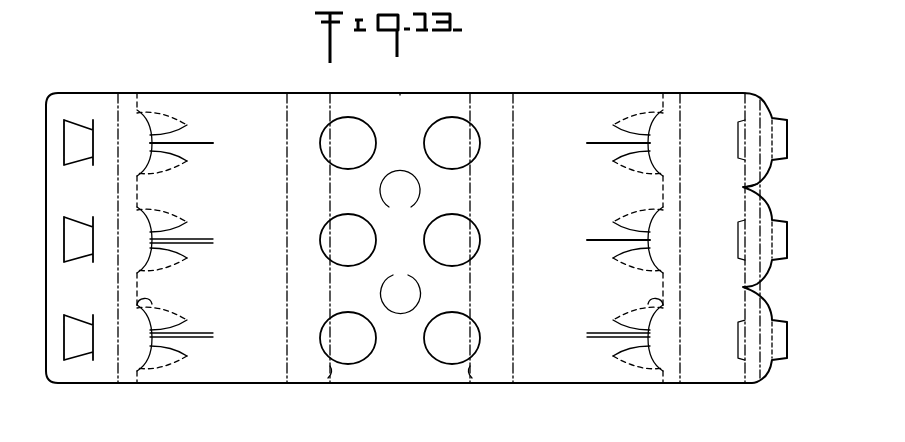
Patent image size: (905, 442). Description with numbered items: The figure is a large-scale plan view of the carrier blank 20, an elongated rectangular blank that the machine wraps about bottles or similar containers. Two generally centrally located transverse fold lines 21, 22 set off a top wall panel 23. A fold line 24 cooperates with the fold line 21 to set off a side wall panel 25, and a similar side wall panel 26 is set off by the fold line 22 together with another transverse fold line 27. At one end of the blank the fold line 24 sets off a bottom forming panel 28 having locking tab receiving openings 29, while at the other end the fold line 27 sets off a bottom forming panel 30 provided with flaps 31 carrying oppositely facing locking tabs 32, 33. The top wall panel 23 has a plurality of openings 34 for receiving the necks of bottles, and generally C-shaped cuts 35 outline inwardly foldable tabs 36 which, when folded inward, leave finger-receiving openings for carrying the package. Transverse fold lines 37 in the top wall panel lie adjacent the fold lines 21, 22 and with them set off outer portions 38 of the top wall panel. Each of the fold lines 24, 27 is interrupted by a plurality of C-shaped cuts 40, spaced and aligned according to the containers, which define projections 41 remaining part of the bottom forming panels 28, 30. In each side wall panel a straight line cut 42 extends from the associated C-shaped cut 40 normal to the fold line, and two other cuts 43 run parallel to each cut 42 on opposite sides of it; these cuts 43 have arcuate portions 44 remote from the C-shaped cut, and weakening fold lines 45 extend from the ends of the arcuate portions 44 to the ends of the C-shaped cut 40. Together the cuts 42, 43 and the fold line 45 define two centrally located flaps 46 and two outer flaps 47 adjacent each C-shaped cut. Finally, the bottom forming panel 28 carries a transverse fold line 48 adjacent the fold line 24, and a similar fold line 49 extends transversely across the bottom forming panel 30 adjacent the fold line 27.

The carrier blank 20 is at (245, 94).
The transverse fold line 21 is at (282, 375).
The transverse fold line 22 is at (520, 372).
The top wall panel 23 is at (410, 98).
The fold line 24 is at (147, 378).
The side wall panel 25 is at (227, 377).
The side wall panel 26 is at (547, 372).
The transverse fold line 27 is at (660, 377).
The bottom forming panel 28 is at (84, 385).
The locking tab receiving openings 29 is at (63, 350).
The bottom forming panel 30 is at (730, 377).
The flaps 31 is at (762, 100).
The locking tab 32 is at (783, 138).
The locking tab 33 is at (738, 141).
The openings 34 is at (343, 128).
The C-shaped cuts 35 is at (420, 290).
The inwardly foldable tabs 36 is at (400, 183).
The transverse fold lines 37 is at (338, 372).
The outer portions 38 is at (313, 375).
The C-shaped cuts 40 is at (136, 222).
The projections 41 is at (655, 243).
The straight line cut 42 is at (200, 333).
The cuts 43 is at (168, 318).
The arcuate portions 44 is at (186, 326).
The weakening fold lines 45 is at (167, 301).
The centrally located flaps 46 is at (185, 232).
The outer flaps 47 is at (164, 218).
The transverse fold line 48 is at (103, 381).
The fold line 49 is at (688, 370).